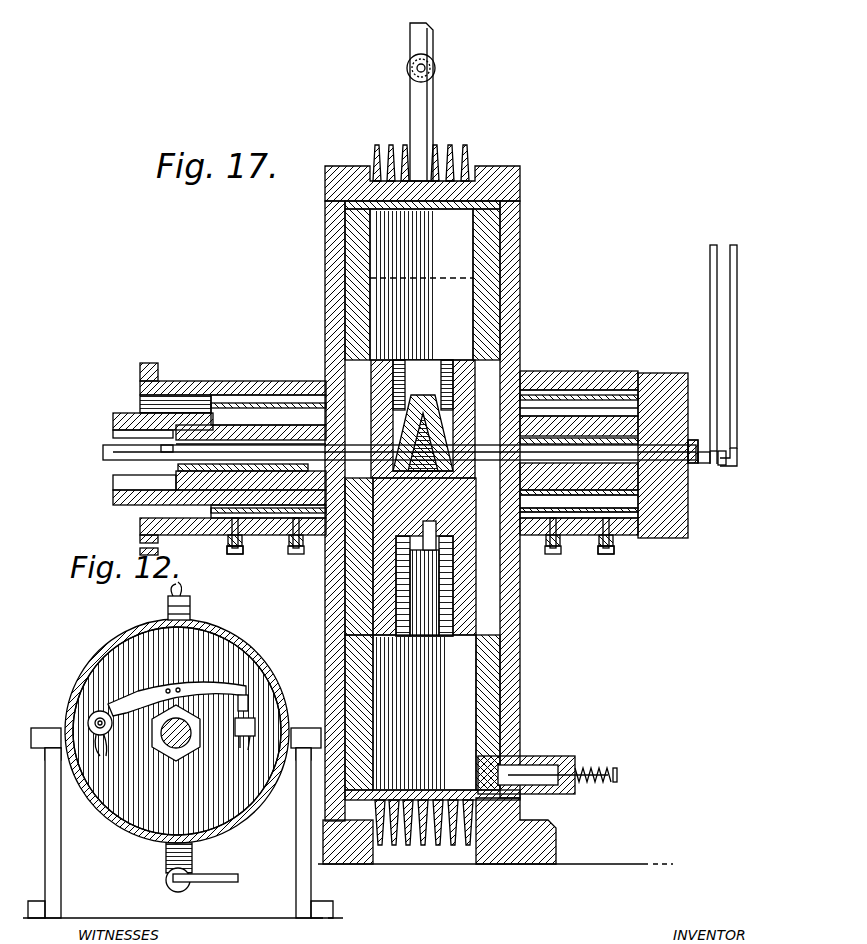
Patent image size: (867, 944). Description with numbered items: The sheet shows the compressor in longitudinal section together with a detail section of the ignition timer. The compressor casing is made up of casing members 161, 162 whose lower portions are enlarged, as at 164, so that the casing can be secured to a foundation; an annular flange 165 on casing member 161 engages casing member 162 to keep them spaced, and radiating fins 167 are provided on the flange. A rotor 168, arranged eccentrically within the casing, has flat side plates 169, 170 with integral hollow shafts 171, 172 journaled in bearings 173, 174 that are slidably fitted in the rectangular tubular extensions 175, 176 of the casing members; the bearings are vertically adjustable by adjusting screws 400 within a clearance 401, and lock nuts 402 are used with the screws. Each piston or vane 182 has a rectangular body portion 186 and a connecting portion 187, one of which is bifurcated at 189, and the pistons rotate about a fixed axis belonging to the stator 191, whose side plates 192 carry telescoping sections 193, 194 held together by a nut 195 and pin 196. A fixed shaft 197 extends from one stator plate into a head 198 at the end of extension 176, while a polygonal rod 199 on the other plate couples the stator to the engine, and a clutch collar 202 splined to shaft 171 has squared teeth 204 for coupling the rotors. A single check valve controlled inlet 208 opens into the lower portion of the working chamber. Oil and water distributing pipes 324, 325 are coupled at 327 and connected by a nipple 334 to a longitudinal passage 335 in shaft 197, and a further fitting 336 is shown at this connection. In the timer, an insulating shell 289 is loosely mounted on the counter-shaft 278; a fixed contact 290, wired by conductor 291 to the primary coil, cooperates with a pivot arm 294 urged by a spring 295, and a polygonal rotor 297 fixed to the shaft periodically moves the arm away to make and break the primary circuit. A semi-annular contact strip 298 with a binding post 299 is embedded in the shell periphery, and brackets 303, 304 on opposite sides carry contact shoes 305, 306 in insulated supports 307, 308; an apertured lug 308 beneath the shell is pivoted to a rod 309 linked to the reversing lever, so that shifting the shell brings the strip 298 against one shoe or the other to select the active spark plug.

In FIG. 17, the casing member 161 is at (325, 305).
In FIG. 17, the casing member 162 is at (512, 288).
In FIG. 17, the enlarged lower portion 164 is at (538, 836).
In FIG. 17, the annular flange 165 is at (417, 800).
In FIG. 17, the radiating ribs or fins 167 is at (445, 138).
In FIG. 17, the rotor 168 is at (495, 185).
In FIG. 17, the side plate 169 is at (350, 283).
In FIG. 17, the side plate 170 is at (480, 338).
In FIG. 17, the hollow shaft 171 is at (252, 418).
In FIG. 17, the hollow shaft 172 is at (605, 418).
In FIG. 17, the bearing 173 is at (285, 390).
In FIG. 17, the bearing 174 is at (580, 398).
In FIG. 17, the tubular extension 175 is at (208, 373).
In FIG. 17, the tubular extension 176 is at (560, 396).
In FIG. 17, the piston or vane 182 is at (455, 215).
In FIG. 17, the rectangular body portion 186 is at (421, 284).
In FIG. 17, the connecting portion 187 is at (505, 395).
In FIG. 17, the bifurcation 189 is at (380, 385).
In FIG. 17, the stator 191 is at (460, 582).
In FIG. 17, the side plate 192 is at (465, 600).
In FIG. 17, the telescoping section 193 is at (372, 505).
In FIG. 17, the telescoping section 194 is at (424, 570).
In FIG. 17, the nut 195 is at (318, 540).
In FIG. 17, the pin 196 is at (318, 596).
In FIG. 17, the fixed shaft 197 is at (600, 485).
In FIG. 17, the head 198 is at (680, 496).
In FIG. 17, the rod 199 is at (100, 428).
In FIG. 17, the clutch collar 202 is at (176, 398).
In FIG. 17, the teeth 204 is at (122, 405).
In FIG. 17, the check valve controlled inlet 208 is at (533, 748).
In FIG. 12, the counter-shaft 278 is at (180, 756).
In FIG. 12, the shell or casing 289 is at (236, 818).
In FIG. 12, the fixed contact 290 is at (262, 690).
In FIG. 12, the conductor 291 is at (237, 742).
In FIG. 12, the pivot arm 294 is at (200, 683).
In FIG. 12, the spring 295 is at (108, 728).
In FIG. 12, the polygonal rotor 297 is at (158, 752).
In FIG. 12, the contact strip 298 is at (236, 642).
In FIG. 12, the binding post 299 is at (182, 600).
In FIG. 12, the bracket 303 is at (53, 854).
In FIG. 12, the bracket 304 is at (303, 879).
In FIG. 12, the contact shoe 305 is at (45, 720).
In FIG. 12, the contact shoe 306 is at (300, 720).
In FIG. 12, the insulated support 307 is at (55, 772).
In FIG. 12, the insulated support 308 is at (184, 848).
In FIG. 12, the rod 309 is at (208, 878).
In FIG. 17, the oil distributing pipe 324 is at (729, 301).
In FIG. 17, the water distributing pipe 325 is at (707, 347).
In FIG. 17, the coupling 327 is at (724, 442).
In FIG. 17, the nipple 334 is at (700, 455).
In FIG. 17, the longitudinal duct or passage 335 is at (678, 518).
In FIG. 17, the gland 336 is at (684, 432).
In FIG. 17, the adjusting screws 400 is at (282, 545).
In FIG. 17, the clearance 401 is at (640, 365).
In FIG. 17, the lock nuts 402 is at (222, 540).